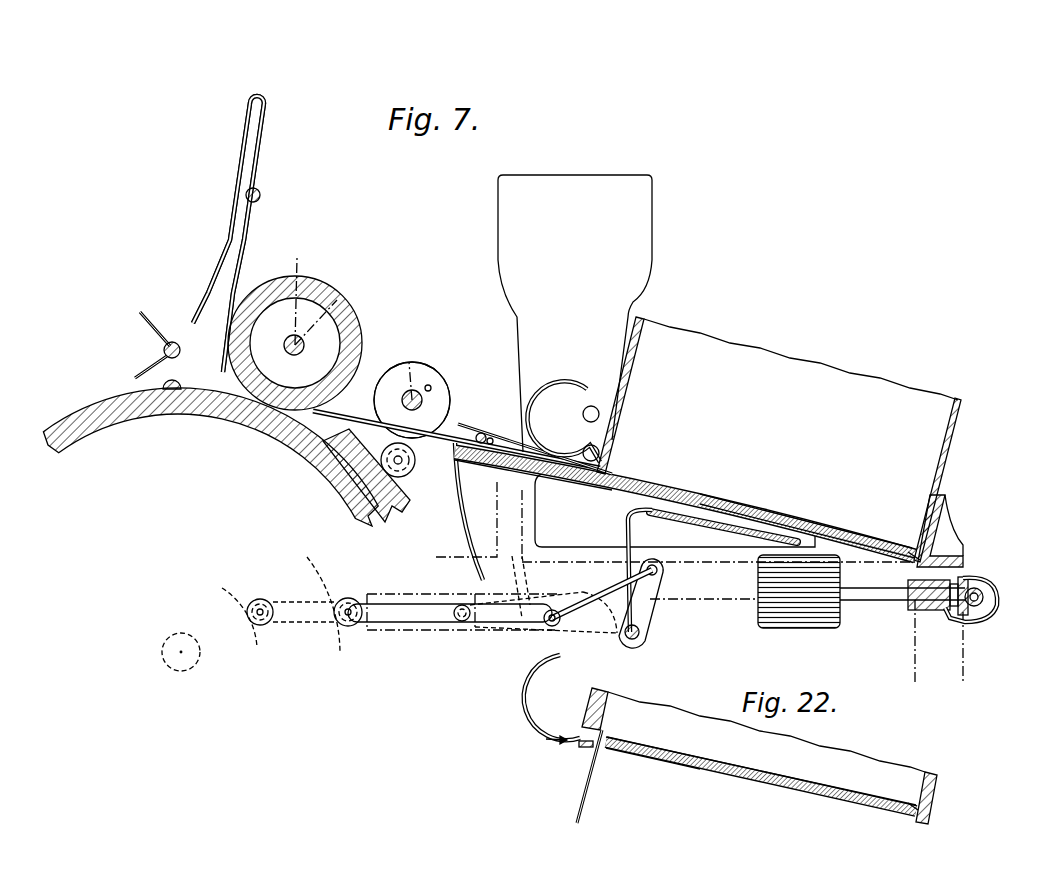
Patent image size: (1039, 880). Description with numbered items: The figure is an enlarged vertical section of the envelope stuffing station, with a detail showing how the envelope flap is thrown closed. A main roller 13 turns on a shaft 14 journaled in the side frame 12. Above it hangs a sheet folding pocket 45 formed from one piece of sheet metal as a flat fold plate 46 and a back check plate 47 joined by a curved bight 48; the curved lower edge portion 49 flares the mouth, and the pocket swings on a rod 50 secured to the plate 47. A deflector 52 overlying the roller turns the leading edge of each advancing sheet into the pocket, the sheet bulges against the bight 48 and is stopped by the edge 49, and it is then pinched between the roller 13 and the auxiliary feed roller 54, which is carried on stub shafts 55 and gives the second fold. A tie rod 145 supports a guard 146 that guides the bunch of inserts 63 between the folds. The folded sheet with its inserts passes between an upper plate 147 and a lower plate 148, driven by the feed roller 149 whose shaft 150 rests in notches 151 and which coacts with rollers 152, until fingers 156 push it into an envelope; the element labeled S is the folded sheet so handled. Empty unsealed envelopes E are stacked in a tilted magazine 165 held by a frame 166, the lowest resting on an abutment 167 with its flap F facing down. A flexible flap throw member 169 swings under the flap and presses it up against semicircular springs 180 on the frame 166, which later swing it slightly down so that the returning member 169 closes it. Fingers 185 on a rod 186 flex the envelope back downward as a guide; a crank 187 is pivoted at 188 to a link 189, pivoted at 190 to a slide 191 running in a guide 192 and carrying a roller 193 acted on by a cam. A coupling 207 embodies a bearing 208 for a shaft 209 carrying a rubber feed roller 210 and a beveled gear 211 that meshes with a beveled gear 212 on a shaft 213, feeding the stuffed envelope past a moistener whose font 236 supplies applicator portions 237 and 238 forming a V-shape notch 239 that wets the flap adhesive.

In FIG. 7, the side frame 12 is at (373, 362).
In FIG. 7, the main roller 13 is at (83, 404).
In FIG. 7, the shaft 14 is at (181, 633).
In FIG. 7, the sheet folding pocket 45 is at (246, 114).
In FIG. 7, the flat fold plate 46 is at (225, 219).
In FIG. 7, the back check plate 47 is at (258, 160).
In FIG. 7, the curved bight 48 is at (258, 92).
In FIG. 7, the lower edge portion 49 is at (197, 317).
In FIG. 7, the rod 50 is at (261, 197).
In FIG. 7, the deflector 52 is at (180, 384).
In FIG. 7, the auxiliary feed roller 54 is at (347, 311).
In FIG. 7, the stub shaft 55 is at (290, 342).
In FIG. 7, the insert 63 is at (490, 467).
In FIG. 22, the insert 63 is at (729, 775).
In FIG. 7, the tie rod 145 is at (164, 351).
In FIG. 7, the guard 146 is at (142, 345).
In FIG. 7, the upper plate 147 is at (355, 425).
In FIG. 7, the lower plate 148 is at (345, 473).
In FIG. 7, the feed roller 149 is at (430, 378).
In FIG. 7, the shaft 150 is at (408, 410).
In FIG. 7, the notch 151 is at (433, 390).
In FIG. 7, the roller 152 is at (405, 476).
In FIG. 7, the finger 156 is at (465, 522).
In FIG. 7, the magazine 165 is at (763, 357).
In FIG. 22, the magazine 165 is at (672, 697).
In FIG. 7, the frame 166 is at (947, 506).
In FIG. 22, the frame 166 is at (933, 796).
In FIG. 7, the abutment 167 is at (910, 563).
In FIG. 22, the abutment 167 is at (904, 822).
In FIG. 7, the flexible flap throw member 169 is at (477, 434).
In FIG. 22, the flexible flap throw member 169 is at (583, 748).
In FIG. 7, the semicircular spring 180 is at (560, 383).
In FIG. 22, the semicircular spring 180 is at (524, 685).
In FIG. 7, the finger 185 is at (630, 532).
In FIG. 7, the rod 186 is at (632, 639).
In FIG. 7, the crank 187 is at (647, 607).
In FIG. 7, the pivot 188 is at (659, 572).
In FIG. 7, the link 189 is at (593, 596).
In FIG. 7, the pivot 190 is at (551, 610).
In FIG. 7, the slide 191 is at (427, 618).
In FIG. 7, the guide 192 is at (389, 634).
In FIG. 7, the roller 193 is at (262, 599).
In FIG. 7, the coupling 207 is at (975, 620).
In FIG. 7, the bearing 208 is at (932, 611).
In FIG. 7, the shaft 209 is at (875, 601).
In FIG. 7, the rubber feed roller 210 is at (783, 628).
In FIG. 7, the beveled gear 211 is at (967, 574).
In FIG. 7, the beveled gear 212 is at (973, 583).
In FIG. 7, the shaft 213 is at (987, 594).
In FIG. 7, the font 236 is at (643, 226).
In FIG. 7, the applicator portion 237 is at (738, 543).
In FIG. 7, the applicator portion 238 is at (793, 525).
In FIG. 7, the V-shape notch 239 is at (737, 510).
In FIG. 7, the envelope E is at (848, 533).
In FIG. 22, the envelope E is at (800, 784).
In FIG. 7, the flap F is at (462, 422).
In FIG. 22, the flap F is at (580, 796).
In FIG. 7, the sheet S is at (584, 486).
In FIG. 22, the sheet S is at (627, 748).